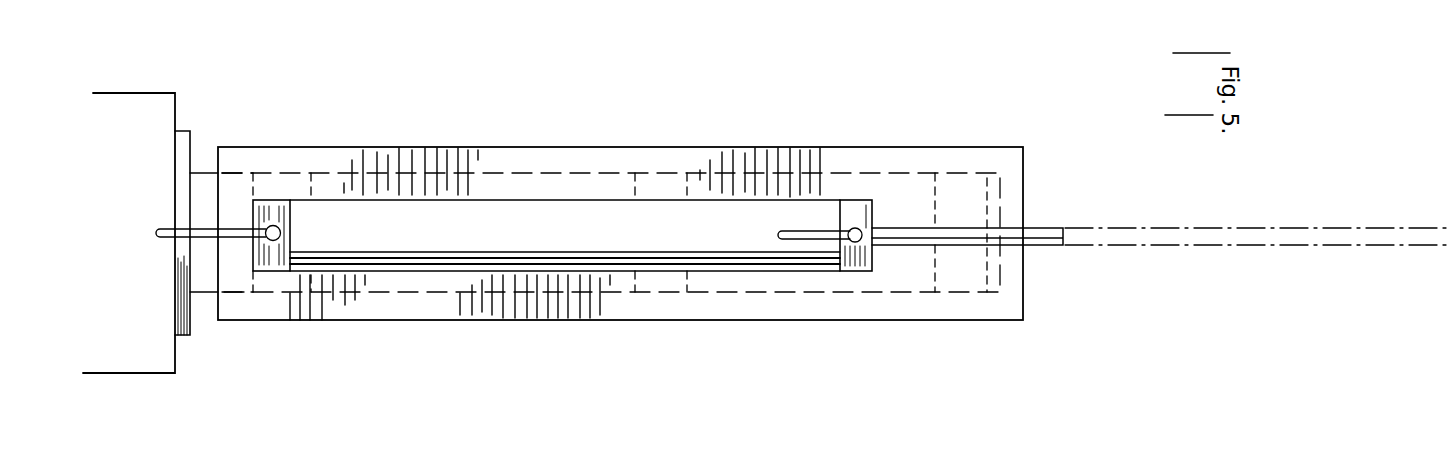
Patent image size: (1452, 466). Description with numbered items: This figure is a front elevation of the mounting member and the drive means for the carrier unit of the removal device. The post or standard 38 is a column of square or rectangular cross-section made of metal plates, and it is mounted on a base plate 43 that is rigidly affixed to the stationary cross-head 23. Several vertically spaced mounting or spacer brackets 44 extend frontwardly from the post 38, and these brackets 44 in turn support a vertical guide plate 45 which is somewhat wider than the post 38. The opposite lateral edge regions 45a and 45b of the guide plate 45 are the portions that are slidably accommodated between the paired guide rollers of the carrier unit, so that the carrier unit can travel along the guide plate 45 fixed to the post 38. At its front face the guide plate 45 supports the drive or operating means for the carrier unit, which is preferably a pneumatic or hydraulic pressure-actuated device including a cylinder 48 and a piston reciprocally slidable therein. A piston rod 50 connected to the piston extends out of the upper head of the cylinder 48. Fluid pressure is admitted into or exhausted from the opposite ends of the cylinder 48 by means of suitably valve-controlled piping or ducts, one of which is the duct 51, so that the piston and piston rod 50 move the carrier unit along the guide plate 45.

The stationary cross-head 23 is at (157, 367).
The base plate 43 is at (188, 335).
The post or standard 38 is at (440, 293).
The mounting or spacer brackets 44 is at (655, 292).
The guide plate 45 is at (1025, 167).
The lateral edge region of guide plate 45a is at (743, 320).
The lateral edge region of guide plate 45b is at (732, 150).
The cylinder 48 is at (612, 212).
The piston rod 50 is at (1047, 240).
The piping or duct 51 is at (820, 240).